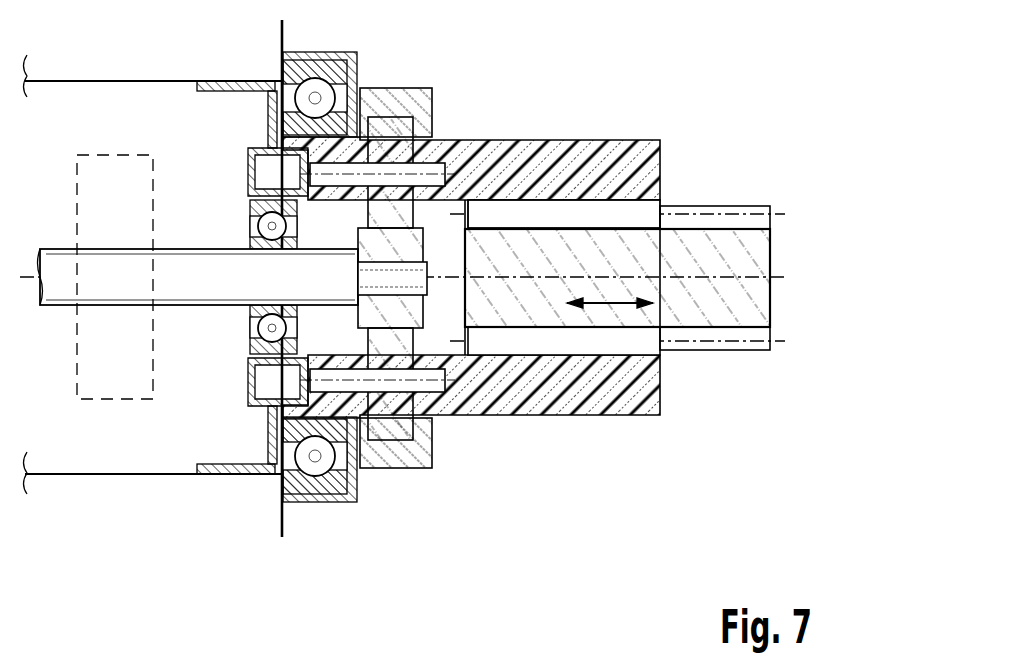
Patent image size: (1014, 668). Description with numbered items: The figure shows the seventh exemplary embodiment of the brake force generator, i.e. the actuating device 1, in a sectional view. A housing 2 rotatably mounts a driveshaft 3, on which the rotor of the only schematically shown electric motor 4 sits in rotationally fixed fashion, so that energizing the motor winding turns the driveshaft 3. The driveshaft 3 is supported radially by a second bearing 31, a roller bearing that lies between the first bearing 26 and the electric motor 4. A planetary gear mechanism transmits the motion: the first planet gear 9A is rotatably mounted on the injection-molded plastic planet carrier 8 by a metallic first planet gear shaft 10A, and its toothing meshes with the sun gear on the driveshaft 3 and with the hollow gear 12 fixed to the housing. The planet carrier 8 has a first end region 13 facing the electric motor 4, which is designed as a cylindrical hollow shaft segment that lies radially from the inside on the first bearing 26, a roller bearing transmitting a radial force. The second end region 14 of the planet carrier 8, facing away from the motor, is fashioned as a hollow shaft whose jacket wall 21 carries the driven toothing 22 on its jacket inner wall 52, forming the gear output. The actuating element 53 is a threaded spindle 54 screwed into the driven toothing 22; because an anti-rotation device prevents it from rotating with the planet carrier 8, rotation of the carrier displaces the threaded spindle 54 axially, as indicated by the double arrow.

The actuating device 1 is at (253, 508).
The housing 2 is at (128, 80).
The driveshaft 3 is at (180, 260).
The electric motor 4 is at (113, 400).
The planet carrier 8 is at (532, 163).
The first planet gear 9A is at (402, 130).
The first planet gear shaft 10A is at (443, 152).
The hollow gear 12 is at (398, 105).
The first end region 13 is at (330, 222).
The second end region 14 is at (580, 127).
The jacket wall 21 is at (608, 176).
The driven toothing 22 is at (607, 205).
The first bearing 26 is at (318, 492).
The second bearing 31 is at (248, 239).
The jacket inner wall 52 is at (652, 218).
The actuating element 53 is at (630, 255).
The threaded spindle 54 is at (746, 250).